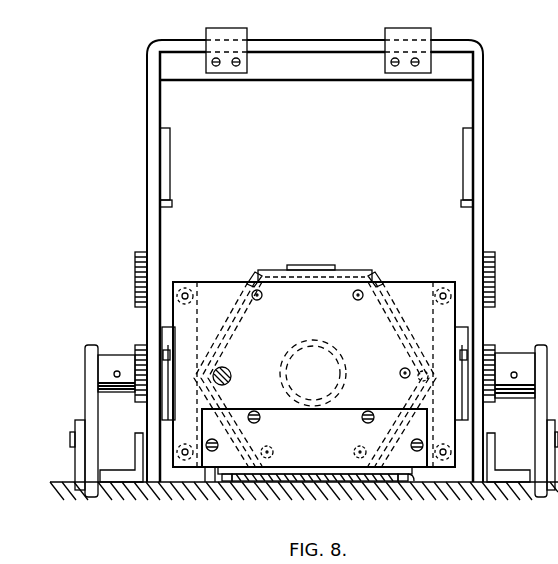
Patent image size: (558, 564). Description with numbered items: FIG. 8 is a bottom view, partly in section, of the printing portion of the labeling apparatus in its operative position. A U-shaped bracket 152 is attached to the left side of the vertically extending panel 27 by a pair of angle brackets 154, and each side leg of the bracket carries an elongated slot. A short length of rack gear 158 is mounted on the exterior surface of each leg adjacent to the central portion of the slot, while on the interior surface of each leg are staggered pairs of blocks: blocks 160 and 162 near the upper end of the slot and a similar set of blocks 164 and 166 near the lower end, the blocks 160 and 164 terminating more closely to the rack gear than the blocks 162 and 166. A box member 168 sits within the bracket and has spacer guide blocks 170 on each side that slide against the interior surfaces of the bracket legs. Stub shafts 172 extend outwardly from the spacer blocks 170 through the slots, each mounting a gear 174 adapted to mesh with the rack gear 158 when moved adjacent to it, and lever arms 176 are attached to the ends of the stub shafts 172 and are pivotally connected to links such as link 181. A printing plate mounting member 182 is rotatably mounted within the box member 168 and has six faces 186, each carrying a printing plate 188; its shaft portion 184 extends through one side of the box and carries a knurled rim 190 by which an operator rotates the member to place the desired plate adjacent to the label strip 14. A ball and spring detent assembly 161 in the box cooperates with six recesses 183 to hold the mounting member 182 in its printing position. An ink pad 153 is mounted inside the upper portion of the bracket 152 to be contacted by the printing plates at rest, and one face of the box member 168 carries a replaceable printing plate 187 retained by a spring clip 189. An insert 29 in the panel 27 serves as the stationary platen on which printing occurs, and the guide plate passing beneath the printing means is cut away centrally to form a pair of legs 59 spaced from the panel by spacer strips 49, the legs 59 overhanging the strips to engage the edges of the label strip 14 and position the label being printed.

The label strip 14 is at (306, 478).
The vertically extending panel 27 is at (136, 498).
The insert 29 is at (258, 490).
The spacer strips 49 is at (230, 485).
The legs 59 is at (412, 482).
The U-shaped bracket 152 is at (252, 30).
The ink pad 153 is at (193, 62).
The angle brackets 154 is at (136, 460).
The rack gear 158 is at (137, 264).
The block 160 is at (171, 205).
The ball and spring detent assembly 161 is at (232, 379).
The block 162 is at (172, 140).
The block 164 is at (152, 338).
The block 166 is at (160, 406).
The box member 168 is at (420, 282).
The spacer guide blocks 170 is at (166, 327).
The stub shafts 172 is at (113, 358).
The gear 174 is at (137, 352).
The lever arms 176 is at (93, 388).
The link 181 is at (78, 490).
The printing plate mounting member 182 is at (356, 350).
The recesses 183 is at (274, 450).
The shaft portion 184 is at (300, 346).
The faces 186 is at (346, 270).
The replaceable printing plate 187 is at (210, 478).
The printing plate 188 is at (224, 310).
The spring clip 189 is at (262, 412).
The knurled rim 190 is at (346, 398).